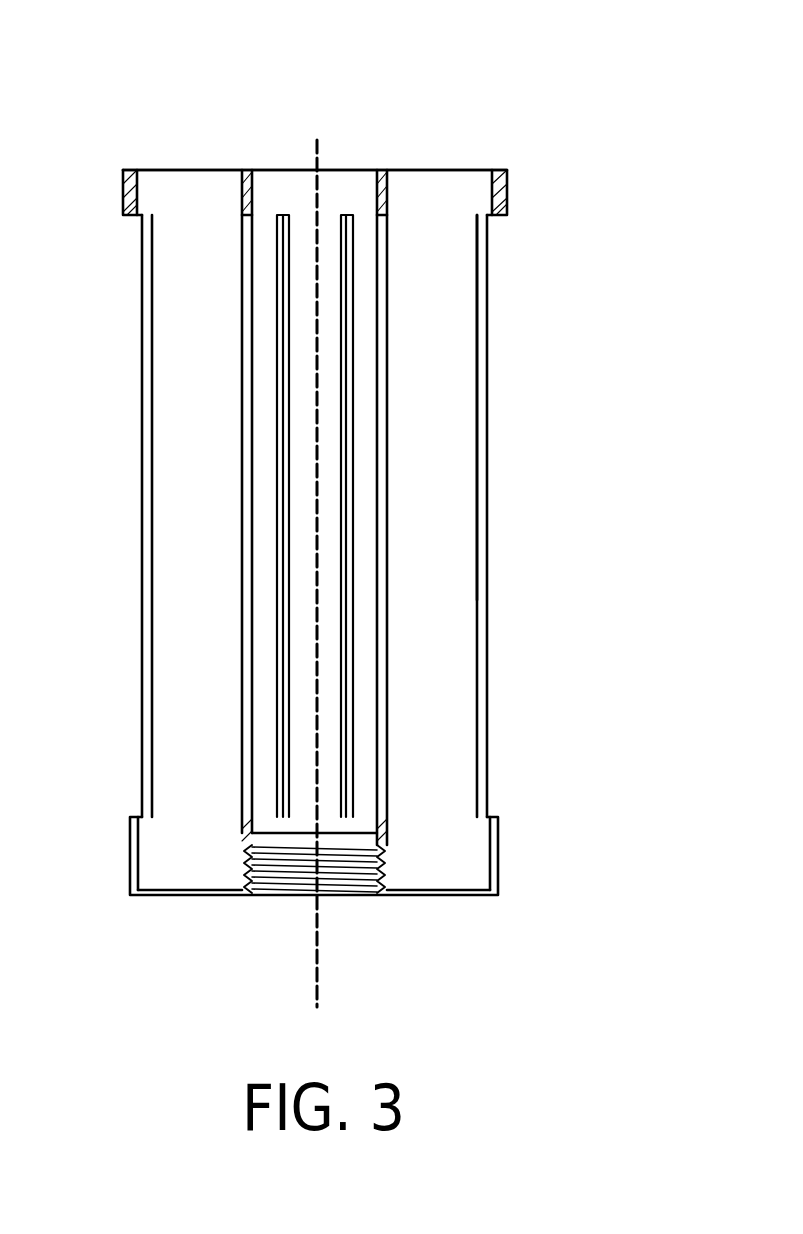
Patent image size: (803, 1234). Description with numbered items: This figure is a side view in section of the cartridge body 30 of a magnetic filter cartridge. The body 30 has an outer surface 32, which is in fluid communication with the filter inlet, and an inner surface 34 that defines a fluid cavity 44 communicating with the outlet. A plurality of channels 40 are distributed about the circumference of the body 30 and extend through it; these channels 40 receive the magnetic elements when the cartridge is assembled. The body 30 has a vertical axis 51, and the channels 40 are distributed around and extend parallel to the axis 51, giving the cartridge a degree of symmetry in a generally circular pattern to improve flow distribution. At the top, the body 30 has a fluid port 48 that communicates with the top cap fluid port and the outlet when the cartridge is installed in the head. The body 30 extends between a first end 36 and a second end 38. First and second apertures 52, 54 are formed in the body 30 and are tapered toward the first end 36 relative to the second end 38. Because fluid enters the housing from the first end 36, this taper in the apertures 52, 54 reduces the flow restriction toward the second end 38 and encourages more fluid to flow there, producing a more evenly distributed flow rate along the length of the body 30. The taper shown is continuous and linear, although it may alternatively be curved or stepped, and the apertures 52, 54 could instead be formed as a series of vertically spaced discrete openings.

The body 30 is at (508, 215).
The outer surface 32 is at (490, 746).
The inner surface 34 is at (260, 299).
The first end 36 is at (487, 170).
The second end 38 is at (405, 893).
The channels 40 is at (189, 170).
The fluid cavity 44 is at (262, 396).
The fluid port 48 is at (388, 170).
The vertical axis 51 is at (313, 914).
The first aperture 52 is at (488, 523).
The second aperture 54 is at (343, 638).